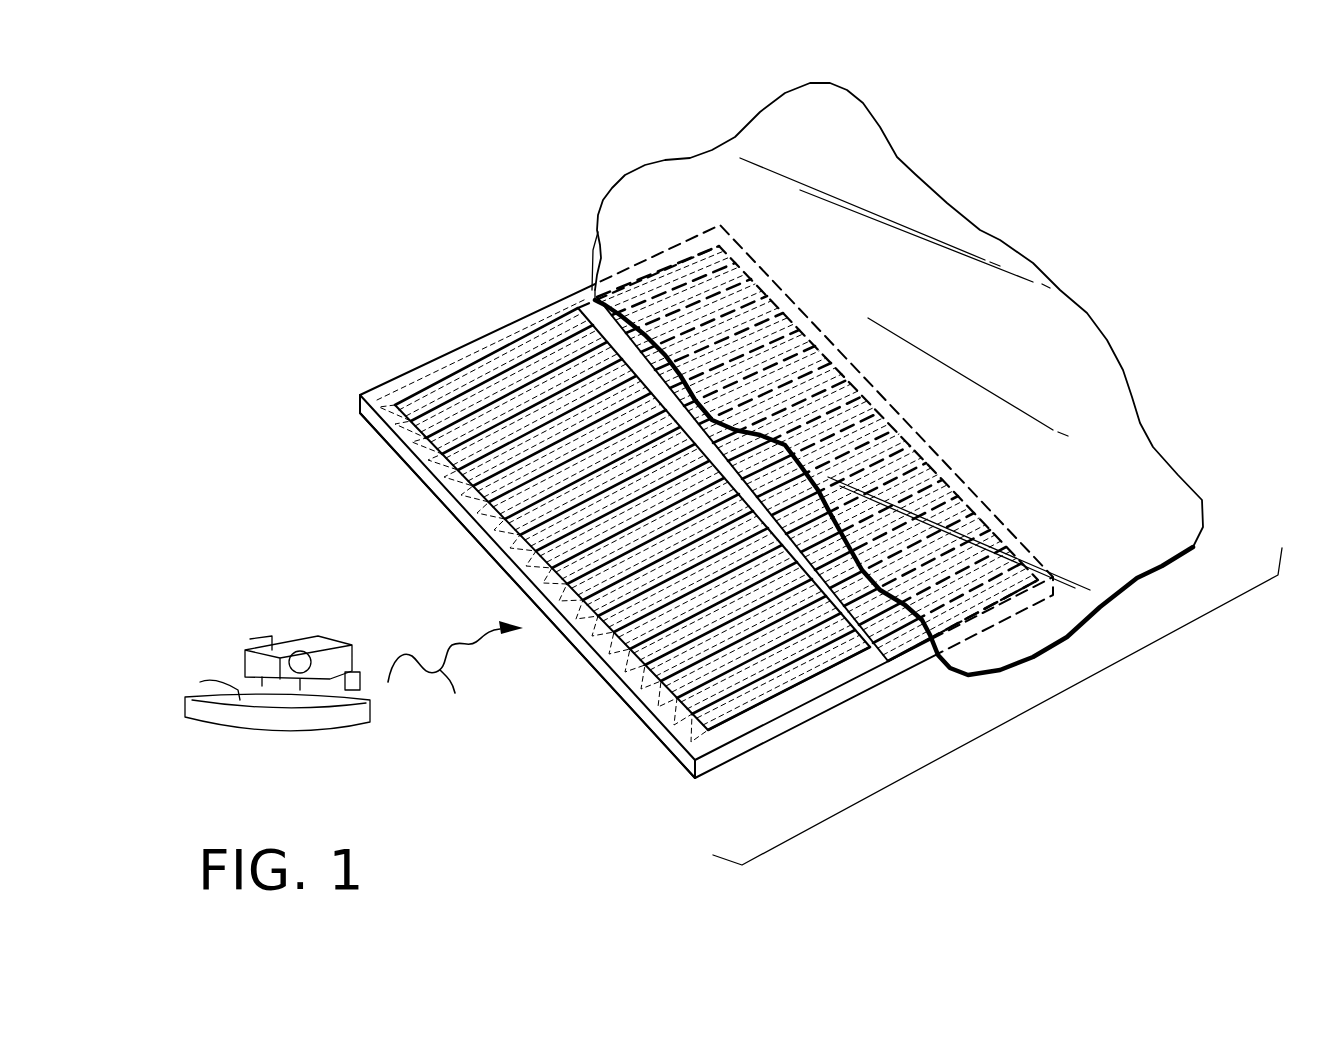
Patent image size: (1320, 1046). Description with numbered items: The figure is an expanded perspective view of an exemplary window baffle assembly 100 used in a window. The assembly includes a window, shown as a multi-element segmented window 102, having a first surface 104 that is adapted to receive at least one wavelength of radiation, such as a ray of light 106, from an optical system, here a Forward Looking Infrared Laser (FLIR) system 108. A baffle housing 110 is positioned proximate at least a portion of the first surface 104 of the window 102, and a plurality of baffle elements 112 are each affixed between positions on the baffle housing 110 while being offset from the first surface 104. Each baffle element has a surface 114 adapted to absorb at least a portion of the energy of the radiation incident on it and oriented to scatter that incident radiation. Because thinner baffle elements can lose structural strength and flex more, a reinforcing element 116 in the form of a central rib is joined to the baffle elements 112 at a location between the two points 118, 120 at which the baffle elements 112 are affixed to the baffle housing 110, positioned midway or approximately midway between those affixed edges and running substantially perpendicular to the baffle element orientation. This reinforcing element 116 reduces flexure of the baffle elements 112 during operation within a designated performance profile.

The window baffle assembly 100 is at (1036, 715).
The multi-element segmented window 102 is at (848, 153).
The first surface 104 is at (581, 245).
The ray of light 106 is at (455, 680).
The Forward Looking Infrared Laser (FLIR) system 108 is at (214, 635).
The baffle housing 110 is at (385, 393).
The baffle elements 112 is at (368, 418).
The surface 114 is at (490, 363).
The reinforcing element 116 is at (862, 625).
The point 118 is at (635, 707).
The point 120 is at (980, 511).